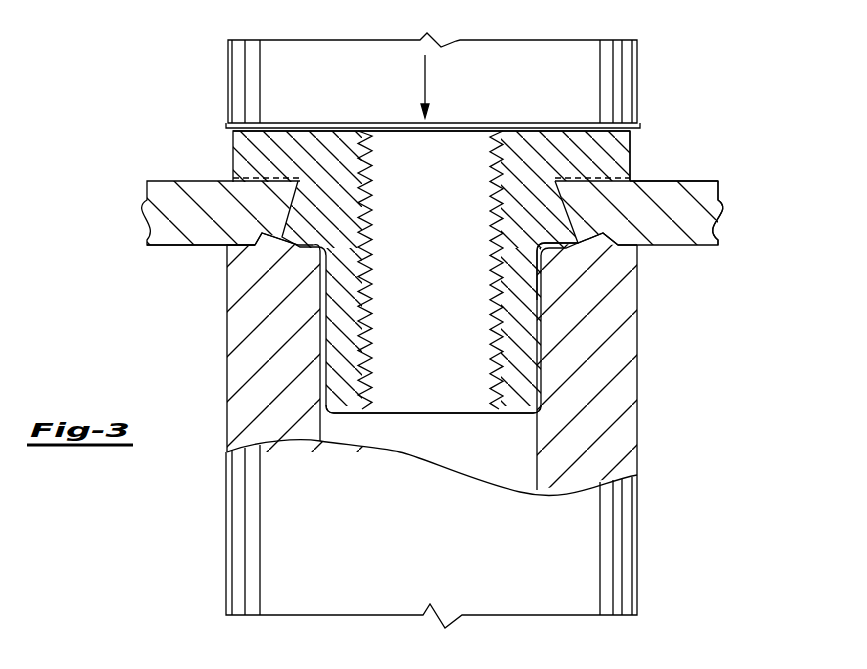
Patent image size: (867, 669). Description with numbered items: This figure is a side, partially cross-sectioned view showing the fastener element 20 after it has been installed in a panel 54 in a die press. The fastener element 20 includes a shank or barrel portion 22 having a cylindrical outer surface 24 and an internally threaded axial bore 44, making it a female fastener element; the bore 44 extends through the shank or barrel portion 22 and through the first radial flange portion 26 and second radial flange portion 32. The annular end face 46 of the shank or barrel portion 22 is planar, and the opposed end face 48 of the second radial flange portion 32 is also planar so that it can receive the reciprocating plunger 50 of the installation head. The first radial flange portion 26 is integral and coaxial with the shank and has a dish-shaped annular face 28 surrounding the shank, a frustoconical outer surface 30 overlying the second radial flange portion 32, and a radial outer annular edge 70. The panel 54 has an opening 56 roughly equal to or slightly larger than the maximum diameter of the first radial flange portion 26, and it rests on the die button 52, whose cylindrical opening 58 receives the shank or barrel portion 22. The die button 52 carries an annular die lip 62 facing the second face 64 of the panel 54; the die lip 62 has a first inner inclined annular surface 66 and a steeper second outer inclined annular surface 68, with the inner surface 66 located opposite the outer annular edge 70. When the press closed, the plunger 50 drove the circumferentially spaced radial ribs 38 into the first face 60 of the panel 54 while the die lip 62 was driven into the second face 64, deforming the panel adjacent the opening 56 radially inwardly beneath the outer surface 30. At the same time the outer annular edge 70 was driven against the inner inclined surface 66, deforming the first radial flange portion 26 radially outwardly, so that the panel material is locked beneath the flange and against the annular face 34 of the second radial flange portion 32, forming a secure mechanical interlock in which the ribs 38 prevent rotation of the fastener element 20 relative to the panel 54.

The fastener element 20 is at (404, 432).
The shank or barrel portion 22 is at (312, 302).
The cylindrical outer surface 24 is at (541, 283).
The first radial flange portion 26 is at (275, 212).
The annular face 28 is at (345, 250).
The outer surface 30 is at (570, 208).
The second radial flange portion 32 is at (222, 147).
The annular face of the second radial flange portion 34 is at (252, 205).
The radial ribs 38 is at (648, 185).
The axial bore 44 is at (364, 316).
The end face 46 is at (349, 415).
The opposed end face 48 is at (571, 130).
The reciprocating plunger 50 is at (352, 96).
The die button 52 is at (635, 378).
The panel 54 is at (163, 232).
The opening 56 is at (265, 203).
The cylindrical opening 58 is at (537, 455).
The first face 60 is at (710, 180).
The die lip 62 is at (262, 246).
The second face 64 is at (713, 247).
The first inner inclined annular surface 66 is at (564, 244).
The second outer inclined annular surface 68 is at (619, 236).
The radial outer annular edge 70 is at (577, 237).